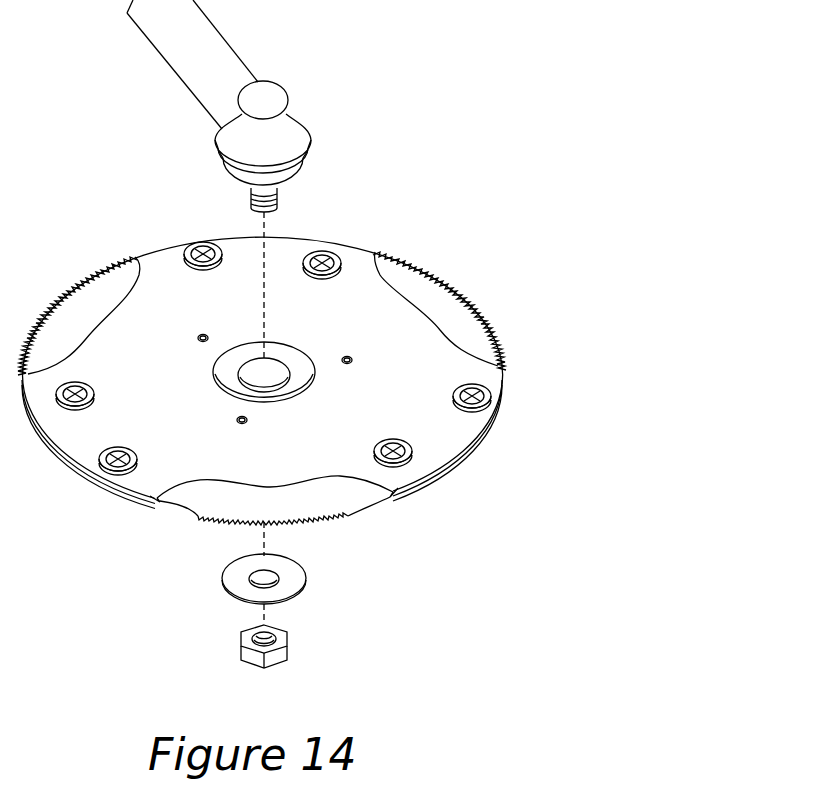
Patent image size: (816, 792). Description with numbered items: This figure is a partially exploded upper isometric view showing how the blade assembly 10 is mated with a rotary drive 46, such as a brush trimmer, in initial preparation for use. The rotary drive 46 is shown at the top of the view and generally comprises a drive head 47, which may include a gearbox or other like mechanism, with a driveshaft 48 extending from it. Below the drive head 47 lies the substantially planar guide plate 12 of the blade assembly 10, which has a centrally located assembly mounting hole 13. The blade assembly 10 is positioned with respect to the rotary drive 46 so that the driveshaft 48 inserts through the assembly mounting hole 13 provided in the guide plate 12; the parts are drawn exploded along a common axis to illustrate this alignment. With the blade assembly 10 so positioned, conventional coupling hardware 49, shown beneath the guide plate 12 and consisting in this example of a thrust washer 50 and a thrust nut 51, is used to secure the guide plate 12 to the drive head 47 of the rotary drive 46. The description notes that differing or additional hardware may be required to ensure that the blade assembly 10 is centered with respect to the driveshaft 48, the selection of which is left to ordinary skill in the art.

The blade assembly 10 is at (446, 194).
The guide plate 12 is at (220, 372).
The assembly mounting hole 13 is at (270, 372).
The rotary drive 46 is at (152, 108).
The drive head 47 is at (292, 134).
The driveshaft 48 is at (279, 208).
The coupling hardware 49 is at (358, 552).
The thrust washer 50 is at (232, 578).
The thrust nut 51 is at (292, 645).